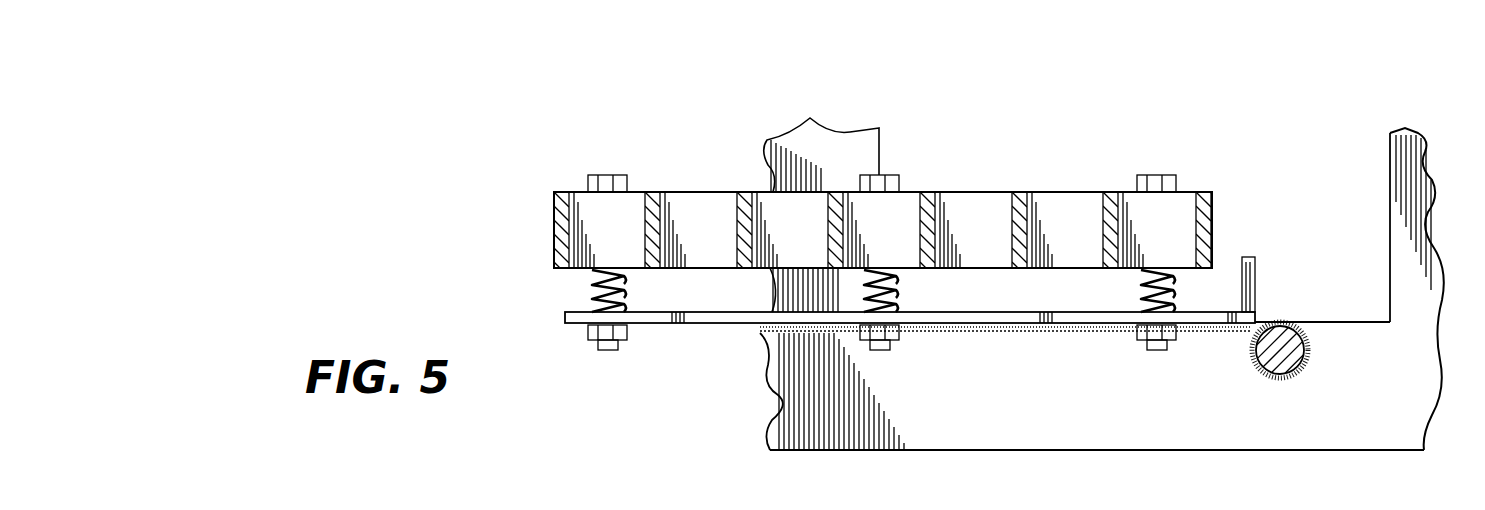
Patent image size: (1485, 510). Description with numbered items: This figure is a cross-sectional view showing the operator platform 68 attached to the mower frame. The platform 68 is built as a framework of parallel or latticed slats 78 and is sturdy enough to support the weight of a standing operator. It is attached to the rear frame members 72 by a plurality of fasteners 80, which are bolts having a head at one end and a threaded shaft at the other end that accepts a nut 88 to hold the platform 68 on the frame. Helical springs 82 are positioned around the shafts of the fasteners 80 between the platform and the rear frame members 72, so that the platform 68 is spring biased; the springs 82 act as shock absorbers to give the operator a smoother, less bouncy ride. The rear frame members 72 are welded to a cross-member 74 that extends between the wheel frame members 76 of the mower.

The platform 68 is at (993, 207).
The rear frame members 72 is at (706, 316).
The cross-member 74 is at (1287, 335).
The wheel frame members 76 is at (1388, 390).
The slats 78 is at (557, 205).
The fasteners 80 is at (604, 183).
The helical springs 82 is at (588, 292).
The nut 88 is at (596, 333).